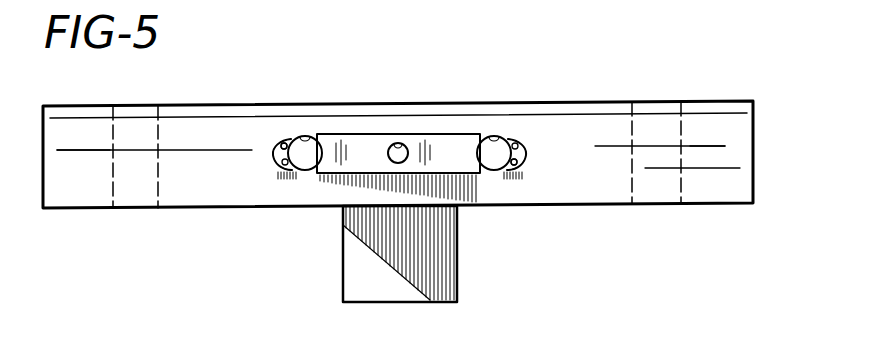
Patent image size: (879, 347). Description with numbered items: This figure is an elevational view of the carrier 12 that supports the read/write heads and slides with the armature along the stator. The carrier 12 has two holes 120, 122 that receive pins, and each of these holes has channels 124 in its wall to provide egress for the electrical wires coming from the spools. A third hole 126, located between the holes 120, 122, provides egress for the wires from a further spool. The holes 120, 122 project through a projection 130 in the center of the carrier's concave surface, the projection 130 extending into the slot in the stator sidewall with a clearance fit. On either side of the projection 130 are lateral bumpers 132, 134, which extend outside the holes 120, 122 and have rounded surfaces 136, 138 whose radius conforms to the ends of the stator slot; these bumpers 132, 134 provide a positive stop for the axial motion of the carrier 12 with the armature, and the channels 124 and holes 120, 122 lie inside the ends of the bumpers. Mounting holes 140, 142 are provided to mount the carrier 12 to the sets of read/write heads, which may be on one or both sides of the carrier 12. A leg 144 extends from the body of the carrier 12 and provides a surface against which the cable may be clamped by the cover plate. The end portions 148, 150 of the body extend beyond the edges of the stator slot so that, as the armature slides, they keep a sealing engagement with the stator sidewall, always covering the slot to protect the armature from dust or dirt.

The carrier 12 is at (636, 90).
The hole 120 is at (300, 137).
The hole 122 is at (488, 137).
The channels 124 is at (276, 137).
The third hole 126 is at (399, 143).
The projection 130 is at (366, 137).
The lateral bumper 132 is at (278, 162).
The lateral bumper 134 is at (522, 140).
The rounded surface 136 is at (262, 140).
The rounded surface 138 is at (527, 148).
The mounting hole 140 is at (632, 172).
The mounting hole 142 is at (158, 172).
The leg 144 is at (343, 258).
The end portion 148 is at (85, 132).
The end portion 150 is at (714, 125).